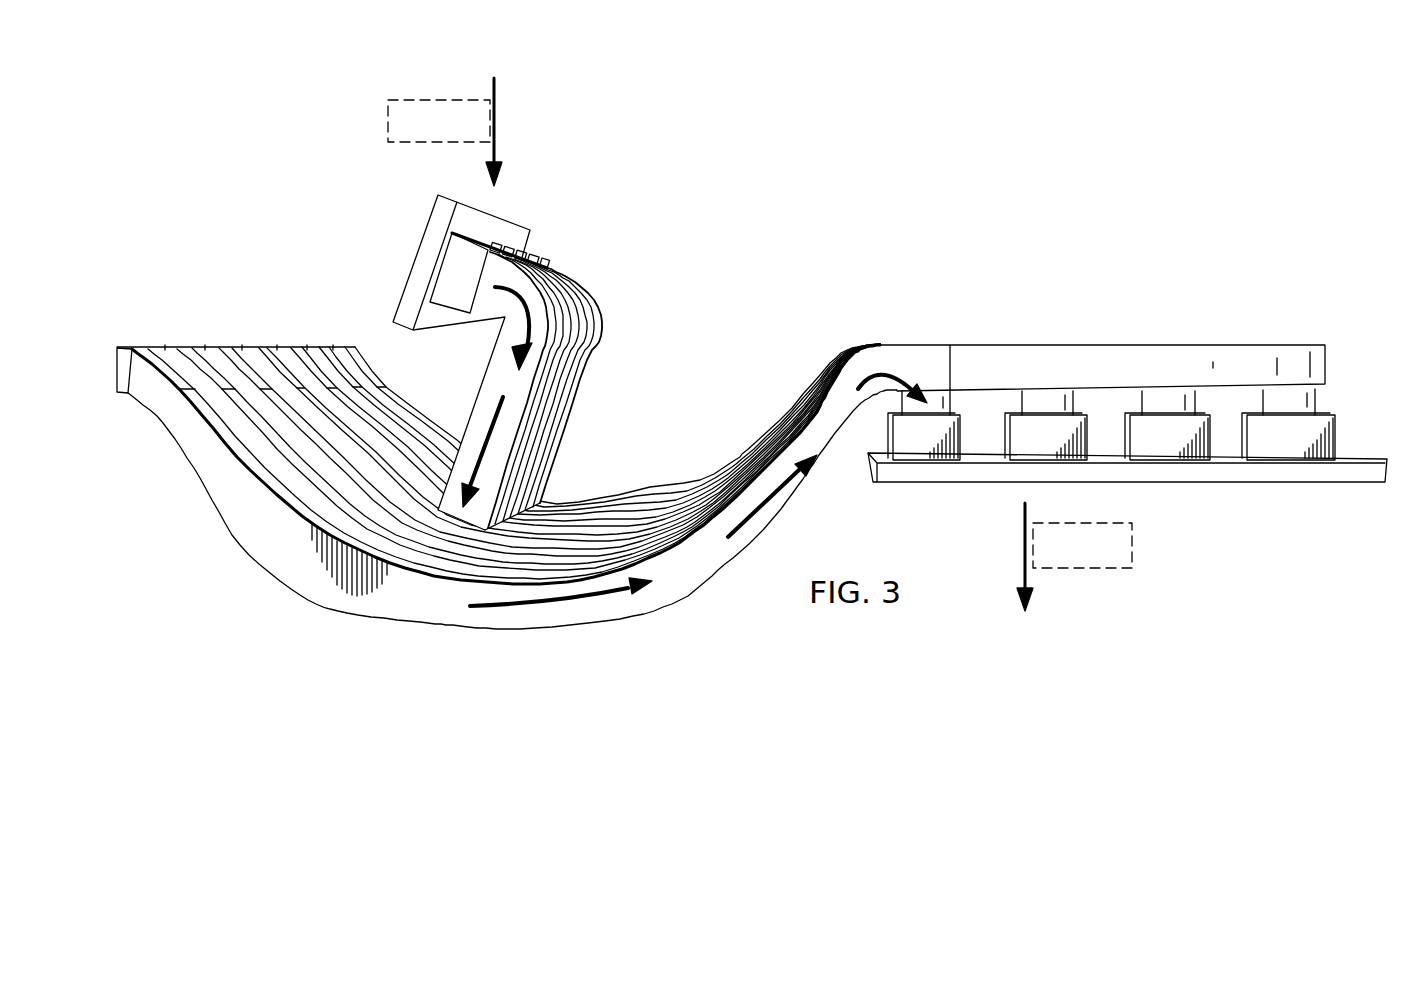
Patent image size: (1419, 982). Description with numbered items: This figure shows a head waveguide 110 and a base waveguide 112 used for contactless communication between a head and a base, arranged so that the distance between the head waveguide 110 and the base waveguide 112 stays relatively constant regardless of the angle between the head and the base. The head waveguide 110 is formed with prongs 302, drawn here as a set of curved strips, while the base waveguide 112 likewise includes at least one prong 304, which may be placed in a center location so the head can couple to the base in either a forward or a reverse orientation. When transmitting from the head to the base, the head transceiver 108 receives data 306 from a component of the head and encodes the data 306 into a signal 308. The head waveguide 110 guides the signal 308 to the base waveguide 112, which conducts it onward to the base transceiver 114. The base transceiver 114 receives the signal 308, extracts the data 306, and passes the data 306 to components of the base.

The head transceiver 108 is at (525, 362).
The head waveguide 110 is at (604, 302).
The base waveguide 112 is at (595, 500).
The base transceiver 114 is at (1256, 485).
The prong 302 is at (132, 347).
The prong 304 is at (586, 392).
The data 306 is at (446, 99).
The signal 308 is at (550, 610).